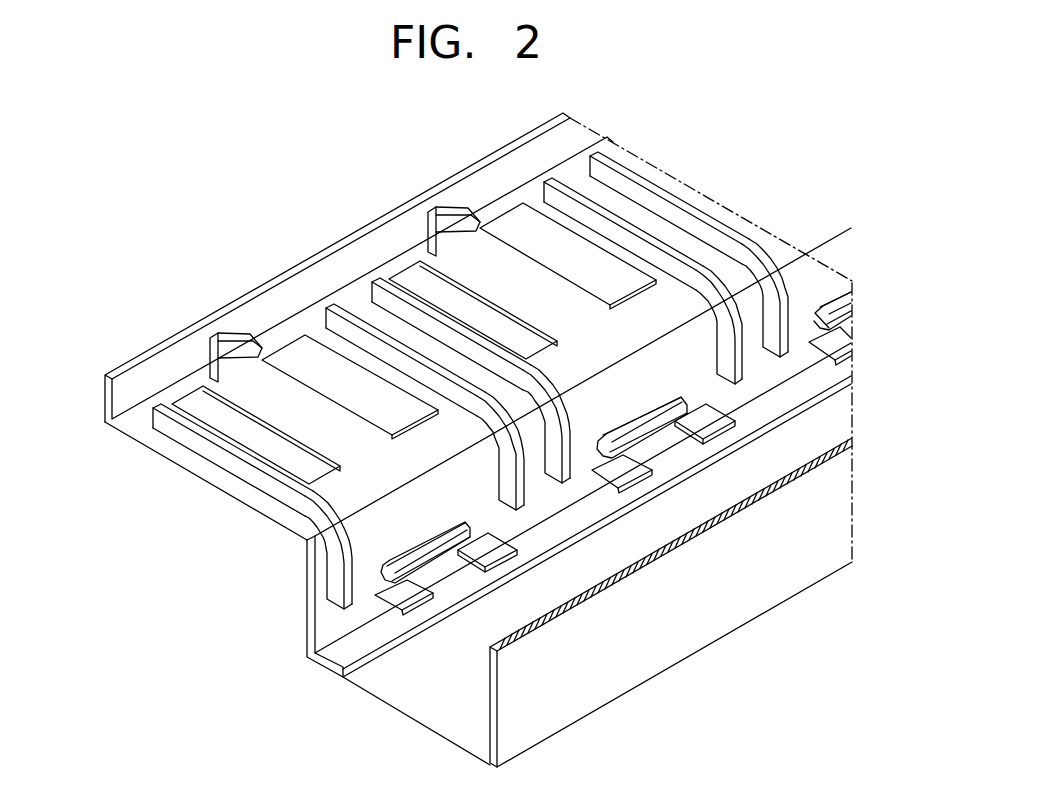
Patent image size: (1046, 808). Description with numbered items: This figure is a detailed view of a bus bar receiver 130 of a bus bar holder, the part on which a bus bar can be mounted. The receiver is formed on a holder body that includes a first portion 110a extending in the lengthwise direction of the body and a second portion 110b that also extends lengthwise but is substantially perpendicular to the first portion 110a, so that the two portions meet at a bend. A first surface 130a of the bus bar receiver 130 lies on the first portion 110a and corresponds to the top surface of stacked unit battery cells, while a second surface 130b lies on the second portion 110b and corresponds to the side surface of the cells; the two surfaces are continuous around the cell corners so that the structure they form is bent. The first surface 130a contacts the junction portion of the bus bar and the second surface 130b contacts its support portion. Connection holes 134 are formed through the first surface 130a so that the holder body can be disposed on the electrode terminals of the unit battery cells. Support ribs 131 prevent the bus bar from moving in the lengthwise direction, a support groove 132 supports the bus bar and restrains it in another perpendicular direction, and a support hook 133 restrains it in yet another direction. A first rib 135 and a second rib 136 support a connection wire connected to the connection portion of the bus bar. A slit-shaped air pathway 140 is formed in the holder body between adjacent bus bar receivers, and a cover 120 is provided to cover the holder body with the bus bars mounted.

The first portion 110a is at (163, 470).
The second portion 110b is at (303, 630).
The cover 120 is at (680, 652).
The bus bar receiver 130 is at (192, 360).
The first surface 130a is at (287, 410).
The second surface 130b is at (385, 528).
The support ribs 131 is at (345, 312).
The support groove 132 is at (385, 565).
The support hook 133 is at (216, 335).
The connection hole 134 is at (300, 355).
The first rib 135 is at (505, 552).
The second rib 136 is at (405, 612).
The air pathway 140 is at (628, 218).